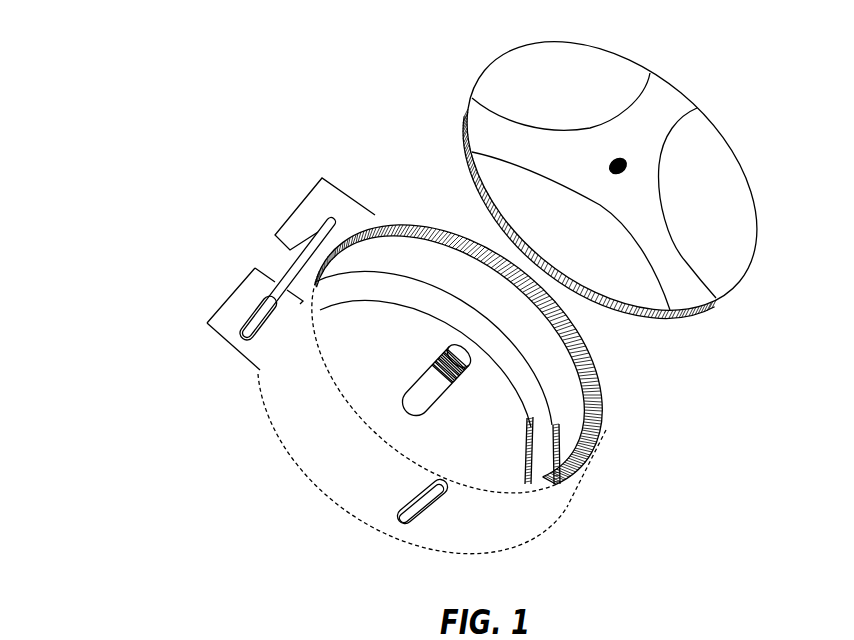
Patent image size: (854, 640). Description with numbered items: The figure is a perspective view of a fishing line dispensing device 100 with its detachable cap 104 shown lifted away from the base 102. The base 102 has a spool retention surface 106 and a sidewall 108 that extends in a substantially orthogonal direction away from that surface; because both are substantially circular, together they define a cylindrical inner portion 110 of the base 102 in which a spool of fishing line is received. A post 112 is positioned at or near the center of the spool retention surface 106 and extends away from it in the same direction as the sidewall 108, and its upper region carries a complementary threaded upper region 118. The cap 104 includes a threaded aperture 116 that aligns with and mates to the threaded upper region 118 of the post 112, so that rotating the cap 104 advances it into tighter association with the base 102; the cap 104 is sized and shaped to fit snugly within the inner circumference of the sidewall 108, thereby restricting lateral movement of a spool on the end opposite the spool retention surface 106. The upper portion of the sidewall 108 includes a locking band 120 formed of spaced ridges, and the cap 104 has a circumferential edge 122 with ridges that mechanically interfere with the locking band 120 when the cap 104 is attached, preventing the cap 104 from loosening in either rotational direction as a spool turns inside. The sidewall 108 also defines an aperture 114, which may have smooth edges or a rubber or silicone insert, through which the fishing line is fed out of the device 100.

The fishing line dispensing device 100 is at (127, 38).
The base 102 is at (188, 210).
The detachable cap 104 is at (426, 73).
The spool retention surface 106 is at (360, 392).
The sidewall 108 is at (507, 530).
The cylindrical inner portion 110 is at (509, 443).
The post 112 is at (423, 400).
The aperture 114 is at (405, 525).
The threaded aperture 116 is at (632, 172).
The threaded upper region 118 is at (465, 377).
The locking band 120 is at (585, 365).
The circumferential edge 122 is at (653, 317).